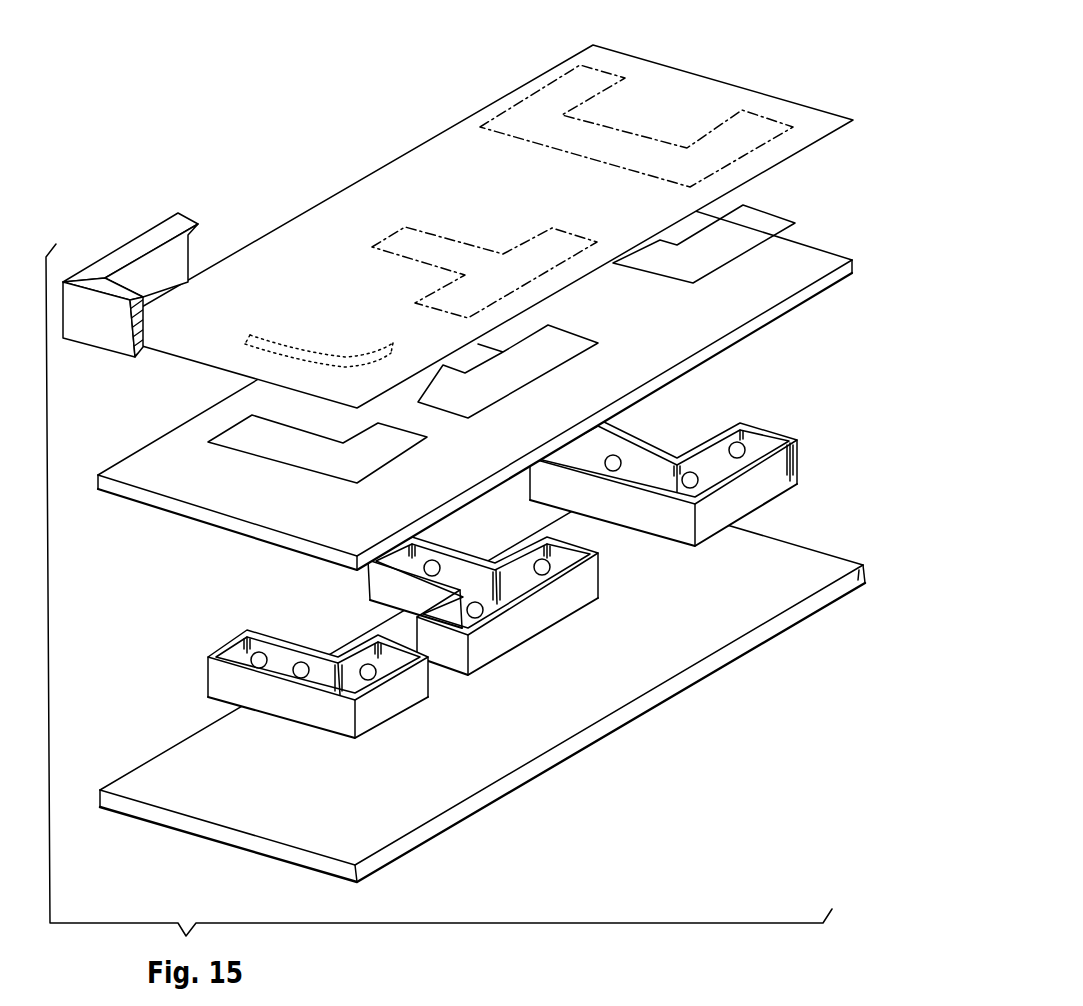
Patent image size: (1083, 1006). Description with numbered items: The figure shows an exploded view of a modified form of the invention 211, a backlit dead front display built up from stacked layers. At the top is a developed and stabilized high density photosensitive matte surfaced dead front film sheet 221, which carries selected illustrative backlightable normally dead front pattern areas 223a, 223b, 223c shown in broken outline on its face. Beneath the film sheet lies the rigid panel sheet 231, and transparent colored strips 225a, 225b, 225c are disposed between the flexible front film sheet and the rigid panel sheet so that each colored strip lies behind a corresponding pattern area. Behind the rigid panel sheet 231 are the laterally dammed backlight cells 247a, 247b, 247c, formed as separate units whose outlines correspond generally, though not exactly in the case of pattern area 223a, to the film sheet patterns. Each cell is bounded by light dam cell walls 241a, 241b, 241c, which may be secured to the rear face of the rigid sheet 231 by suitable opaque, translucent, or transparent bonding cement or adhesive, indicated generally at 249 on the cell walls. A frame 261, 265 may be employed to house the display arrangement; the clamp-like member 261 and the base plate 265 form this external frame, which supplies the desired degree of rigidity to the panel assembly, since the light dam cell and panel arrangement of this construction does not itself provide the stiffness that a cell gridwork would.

The modified form of the invention 211 is at (725, 70).
The dead front film sheet 221 is at (475, 213).
The backlightable normally dead front pattern area 223a is at (330, 361).
The backlightable normally dead front pattern area 223b is at (477, 251).
The backlightable normally dead front pattern area 223c is at (606, 78).
The rigid panel sheet 231 is at (481, 374).
The transparent colored strip 225a is at (406, 447).
The transparent colored strip 225b is at (587, 341).
The transparent colored strip 225c is at (773, 224).
The light dam cell wall 241a is at (352, 676).
The light dam cell wall 241b is at (506, 594).
The light dam cell wall 241c is at (697, 479).
The laterally dammed backlight cell 247a is at (323, 672).
The laterally dammed backlight cell 247b is at (462, 573).
The laterally dammed backlight cell 247c is at (648, 469).
The bonding cement or adhesive 249 is at (779, 431).
The frame 261 is at (92, 341).
The frame 265 is at (418, 813).